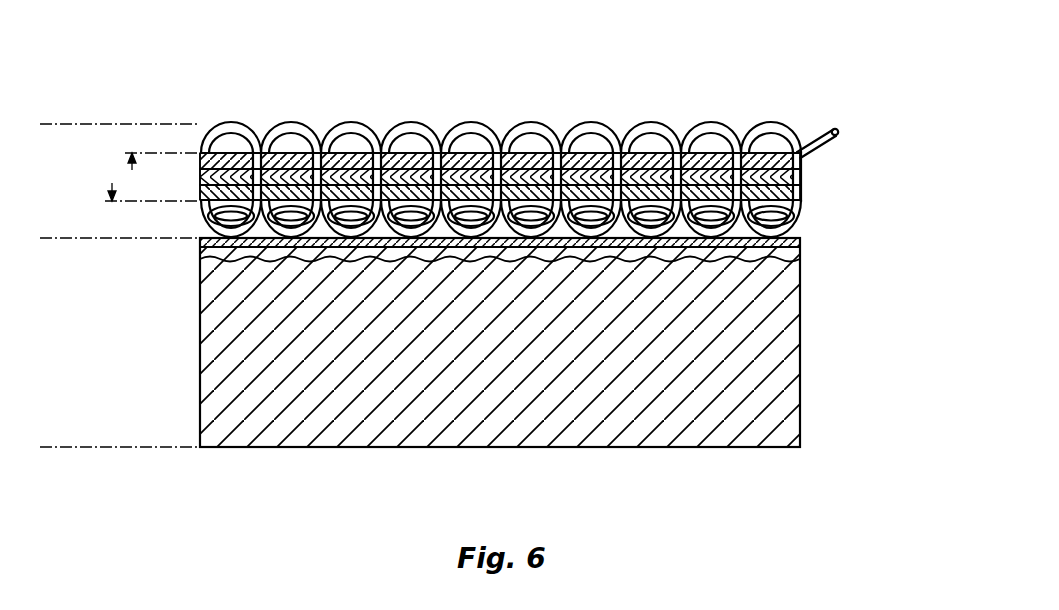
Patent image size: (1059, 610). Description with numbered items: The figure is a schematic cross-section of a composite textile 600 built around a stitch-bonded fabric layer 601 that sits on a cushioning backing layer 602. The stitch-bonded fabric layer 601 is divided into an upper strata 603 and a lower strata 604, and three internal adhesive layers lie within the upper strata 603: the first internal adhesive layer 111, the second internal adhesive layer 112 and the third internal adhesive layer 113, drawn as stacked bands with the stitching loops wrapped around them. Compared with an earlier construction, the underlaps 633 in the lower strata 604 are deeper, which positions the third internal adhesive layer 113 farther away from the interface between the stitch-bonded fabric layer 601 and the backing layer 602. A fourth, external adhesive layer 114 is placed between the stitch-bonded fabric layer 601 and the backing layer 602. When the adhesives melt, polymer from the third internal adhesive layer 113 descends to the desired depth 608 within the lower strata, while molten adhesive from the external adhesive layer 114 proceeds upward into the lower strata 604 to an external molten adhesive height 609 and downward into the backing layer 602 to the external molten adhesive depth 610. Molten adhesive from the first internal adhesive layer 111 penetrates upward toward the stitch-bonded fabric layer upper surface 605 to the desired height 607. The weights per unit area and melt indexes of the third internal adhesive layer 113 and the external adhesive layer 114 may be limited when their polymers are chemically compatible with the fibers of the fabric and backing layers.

The composite textile 600 is at (831, 101).
The stitch-bonded fabric layer 601 is at (65, 124).
The backing layer 602 is at (65, 238).
The upper strata 603 is at (132, 124).
The lower strata 604 is at (112, 238).
The stitch-bonded fabric layer upper surface 605 is at (541, 272).
The desired height 607 is at (652, 138).
The desired depth 608 is at (709, 221).
The external molten adhesive height 609 is at (715, 310).
The external molten adhesive depth 610 is at (550, 265).
The underlaps 633 is at (610, 243).
The first internal adhesive layer 111 is at (838, 130).
The second internal adhesive layer 112 is at (803, 175).
The third internal adhesive layer 113 is at (785, 187).
The external adhesive layer 114 is at (802, 240).